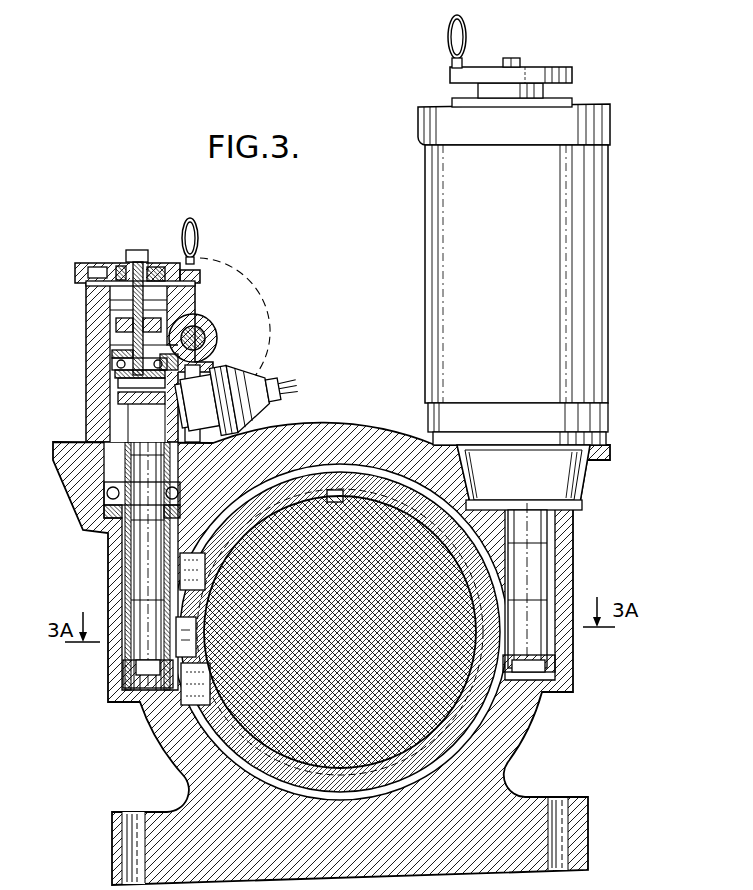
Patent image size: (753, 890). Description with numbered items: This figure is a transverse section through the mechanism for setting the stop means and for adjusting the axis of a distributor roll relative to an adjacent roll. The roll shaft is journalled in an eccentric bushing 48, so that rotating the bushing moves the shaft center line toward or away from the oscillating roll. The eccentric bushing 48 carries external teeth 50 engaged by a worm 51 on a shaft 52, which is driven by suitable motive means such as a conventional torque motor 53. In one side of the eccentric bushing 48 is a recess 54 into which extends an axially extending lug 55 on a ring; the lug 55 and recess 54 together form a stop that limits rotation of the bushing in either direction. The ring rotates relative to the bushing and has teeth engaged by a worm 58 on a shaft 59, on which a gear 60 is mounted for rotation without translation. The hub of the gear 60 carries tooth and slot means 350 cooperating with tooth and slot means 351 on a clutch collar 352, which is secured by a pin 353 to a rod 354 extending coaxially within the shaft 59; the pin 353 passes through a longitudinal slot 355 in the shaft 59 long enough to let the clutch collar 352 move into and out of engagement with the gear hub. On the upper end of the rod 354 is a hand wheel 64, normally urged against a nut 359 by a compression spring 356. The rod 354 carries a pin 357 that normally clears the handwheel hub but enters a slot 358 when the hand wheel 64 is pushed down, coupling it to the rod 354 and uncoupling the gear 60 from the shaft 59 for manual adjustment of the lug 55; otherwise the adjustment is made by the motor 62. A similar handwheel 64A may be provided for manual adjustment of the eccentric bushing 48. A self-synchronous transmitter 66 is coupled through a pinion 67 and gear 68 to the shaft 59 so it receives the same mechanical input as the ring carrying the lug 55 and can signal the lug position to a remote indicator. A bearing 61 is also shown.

The eccentric bushing 48 is at (478, 698).
The external teeth 50 is at (478, 733).
The worm 51 is at (556, 655).
The shaft 52 is at (540, 557).
The torque motor 53 is at (603, 280).
The recess 54 is at (225, 583).
The lug 55 is at (205, 662).
The worm 58 is at (132, 660).
The shaft 59 is at (135, 556).
The gear 60 is at (124, 341).
The bearing 61 is at (200, 332).
The motor 62 is at (273, 320).
The hand wheel 64 is at (185, 230).
The handwheel 64A is at (455, 40).
The self-synchronous transmitter 66 is at (207, 394).
The pinion 67 is at (173, 403).
The gear 68 is at (126, 396).
The tooth and slot means 350 is at (118, 354).
The tooth and slot means 351 is at (126, 364).
The clutch collar 352 is at (175, 361).
The pin 353 is at (128, 374).
The rod 354 is at (138, 325).
The longitudinal slot 355 is at (130, 383).
The compression spring 356 is at (121, 271).
The pin 357 is at (110, 282).
The slot 358 is at (150, 275).
The nut 359 is at (133, 250).